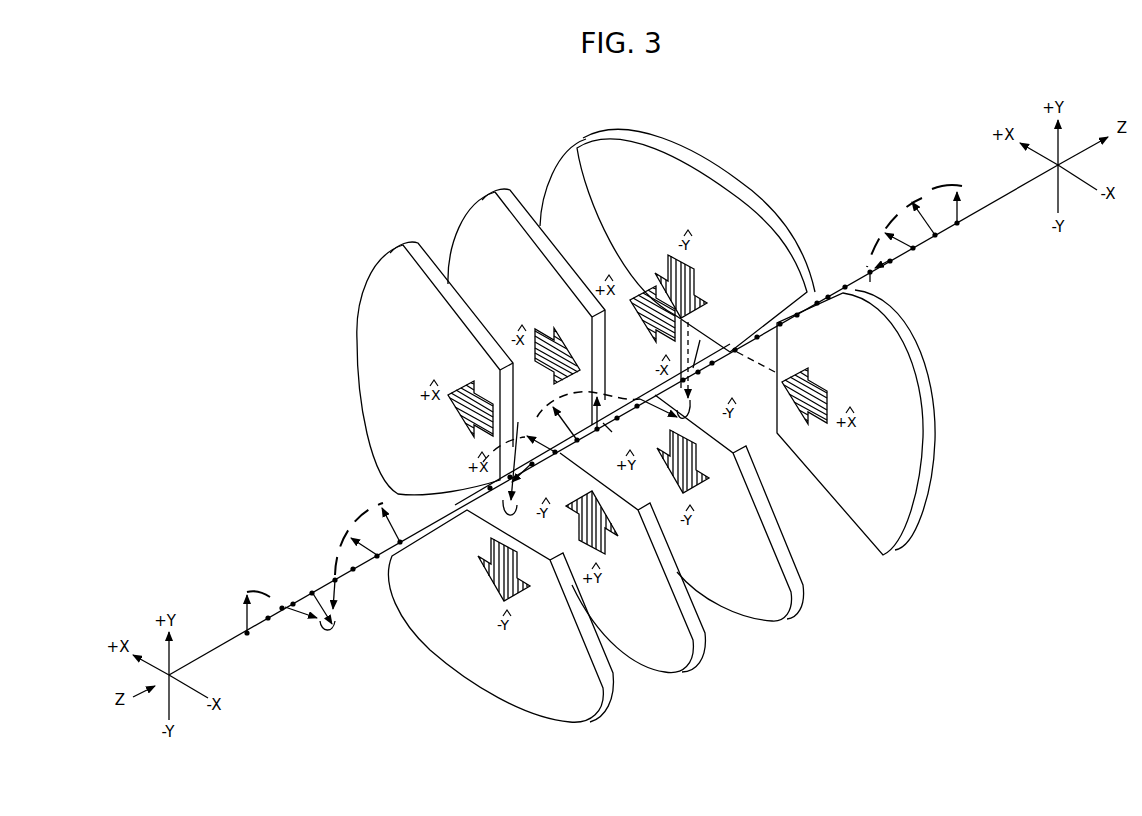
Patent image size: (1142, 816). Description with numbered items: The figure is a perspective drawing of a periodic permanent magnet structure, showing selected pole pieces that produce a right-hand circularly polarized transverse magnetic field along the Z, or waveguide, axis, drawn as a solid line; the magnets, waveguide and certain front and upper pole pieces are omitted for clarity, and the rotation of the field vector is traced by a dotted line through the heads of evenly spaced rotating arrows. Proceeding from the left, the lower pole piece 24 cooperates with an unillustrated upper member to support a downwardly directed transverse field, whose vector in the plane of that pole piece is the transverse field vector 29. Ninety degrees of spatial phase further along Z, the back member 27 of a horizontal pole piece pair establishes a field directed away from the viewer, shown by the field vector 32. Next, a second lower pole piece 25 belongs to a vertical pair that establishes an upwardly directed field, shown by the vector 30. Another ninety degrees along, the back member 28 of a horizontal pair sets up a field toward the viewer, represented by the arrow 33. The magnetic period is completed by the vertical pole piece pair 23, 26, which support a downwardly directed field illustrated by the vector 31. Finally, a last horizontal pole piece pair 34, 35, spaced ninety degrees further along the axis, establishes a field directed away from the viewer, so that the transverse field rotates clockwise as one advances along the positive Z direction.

The vertical pole piece pair member 23 is at (705, 152).
The lower pole piece 24 is at (623, 703).
The second lower pole piece 25 is at (708, 658).
The vertical pole piece pair member 26 is at (798, 610).
The back member of horizontal pole piece pair 27 is at (381, 258).
The back member of horizontal pole piece pair 28 is at (470, 207).
The transverse field vector 29 is at (514, 503).
The field vector 30 is at (603, 423).
The field vector 31 is at (690, 397).
The field vector 32 is at (496, 488).
The field arrow 33 is at (645, 391).
The horizontal pole piece pair member 34 is at (560, 163).
The horizontal pole piece pair member 35 is at (922, 527).